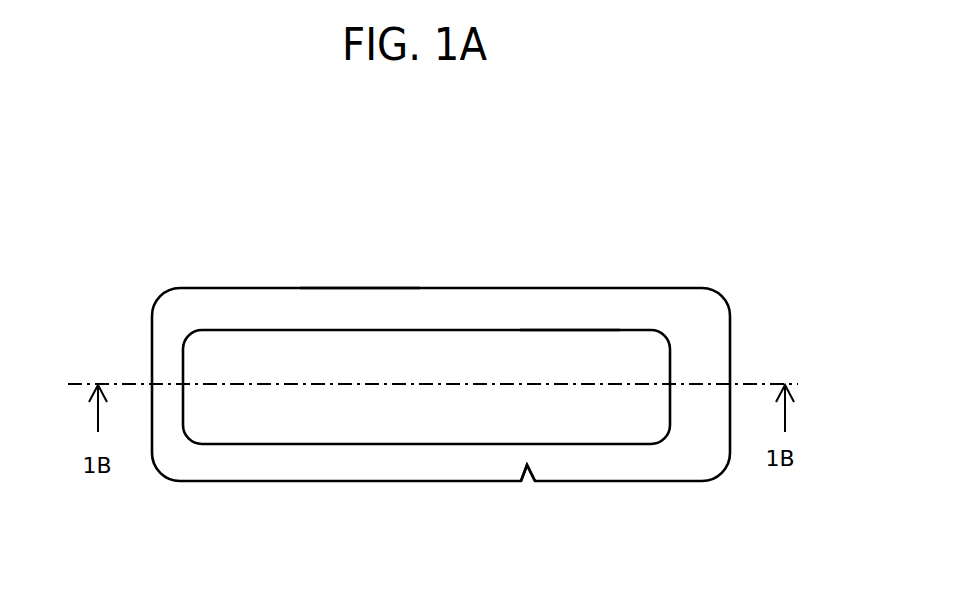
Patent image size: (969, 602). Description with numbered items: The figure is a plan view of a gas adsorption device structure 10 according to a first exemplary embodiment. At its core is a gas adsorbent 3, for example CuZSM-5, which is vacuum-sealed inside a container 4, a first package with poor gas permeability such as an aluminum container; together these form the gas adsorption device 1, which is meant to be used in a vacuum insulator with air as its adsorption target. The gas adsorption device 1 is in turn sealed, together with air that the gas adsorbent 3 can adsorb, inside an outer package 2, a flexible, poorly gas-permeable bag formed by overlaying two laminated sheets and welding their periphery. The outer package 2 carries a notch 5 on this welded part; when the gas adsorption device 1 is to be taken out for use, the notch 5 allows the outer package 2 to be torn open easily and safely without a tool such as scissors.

The gas adsorption device structure 10 is at (658, 258).
The gas adsorption device 1 is at (273, 330).
The outer package 2 is at (360, 300).
The gas adsorbent 3 is at (482, 357).
The container 4 is at (570, 330).
The notch 5 is at (525, 485).